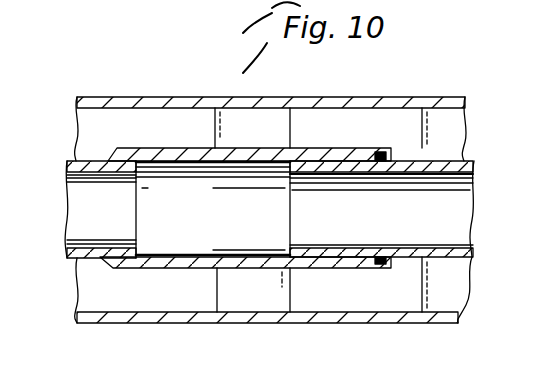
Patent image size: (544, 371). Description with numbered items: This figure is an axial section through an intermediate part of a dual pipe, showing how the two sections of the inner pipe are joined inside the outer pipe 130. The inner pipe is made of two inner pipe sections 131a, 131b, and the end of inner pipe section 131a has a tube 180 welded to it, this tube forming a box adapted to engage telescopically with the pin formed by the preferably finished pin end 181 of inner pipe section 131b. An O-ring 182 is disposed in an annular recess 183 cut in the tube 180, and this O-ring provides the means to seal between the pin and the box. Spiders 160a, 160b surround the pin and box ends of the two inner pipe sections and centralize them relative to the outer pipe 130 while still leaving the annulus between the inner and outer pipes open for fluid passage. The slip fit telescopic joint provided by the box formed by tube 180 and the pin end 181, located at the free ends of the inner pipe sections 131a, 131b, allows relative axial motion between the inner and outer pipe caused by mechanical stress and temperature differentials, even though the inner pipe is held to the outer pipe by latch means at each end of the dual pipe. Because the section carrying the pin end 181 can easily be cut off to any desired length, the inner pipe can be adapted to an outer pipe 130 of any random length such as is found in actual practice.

The outer pipe 130 is at (409, 96).
The inner pipe section 131a is at (63, 165).
The inner pipe section 131b is at (407, 247).
The spider 160a is at (257, 298).
The spider 160b is at (440, 295).
The tube 180 is at (157, 157).
The pin end 181 is at (312, 247).
The O-ring 182 is at (380, 150).
The annular recess 183 is at (379, 268).